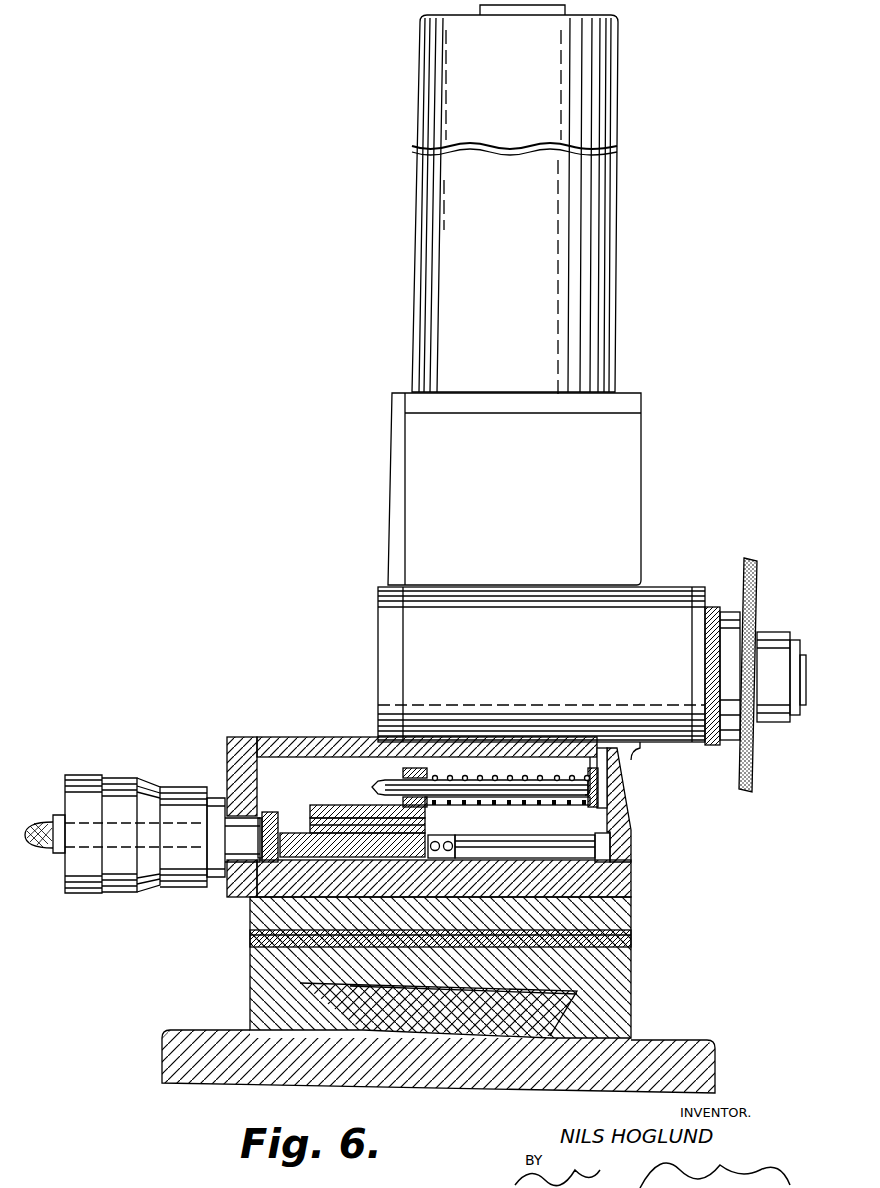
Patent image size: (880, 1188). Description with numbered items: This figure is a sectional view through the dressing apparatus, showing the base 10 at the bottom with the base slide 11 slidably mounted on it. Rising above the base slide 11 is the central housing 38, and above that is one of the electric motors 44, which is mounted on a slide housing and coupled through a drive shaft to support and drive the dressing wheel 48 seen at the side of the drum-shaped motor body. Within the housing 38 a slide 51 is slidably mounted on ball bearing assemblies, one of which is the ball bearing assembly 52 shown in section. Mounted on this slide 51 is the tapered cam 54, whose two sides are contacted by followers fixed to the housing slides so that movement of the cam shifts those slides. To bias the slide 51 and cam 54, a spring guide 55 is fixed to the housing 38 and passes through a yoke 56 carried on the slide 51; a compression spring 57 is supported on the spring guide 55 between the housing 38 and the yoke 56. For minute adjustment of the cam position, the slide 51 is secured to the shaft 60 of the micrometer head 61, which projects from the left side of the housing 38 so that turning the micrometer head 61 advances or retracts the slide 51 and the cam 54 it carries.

The base 10 is at (683, 1048).
The base slide 11 is at (612, 977).
The central housing 38 is at (292, 742).
The electric motor 44 is at (595, 302).
The dressing wheel 48 is at (758, 598).
The slide 51 is at (338, 838).
The ball bearing assembly 52 is at (438, 835).
The tapered cam 54 is at (322, 796).
The spring guide 55 is at (532, 835).
The yoke 56 is at (395, 773).
The compression spring 57 is at (548, 804).
The shaft 60 is at (272, 812).
The micrometer head 61 is at (130, 778).